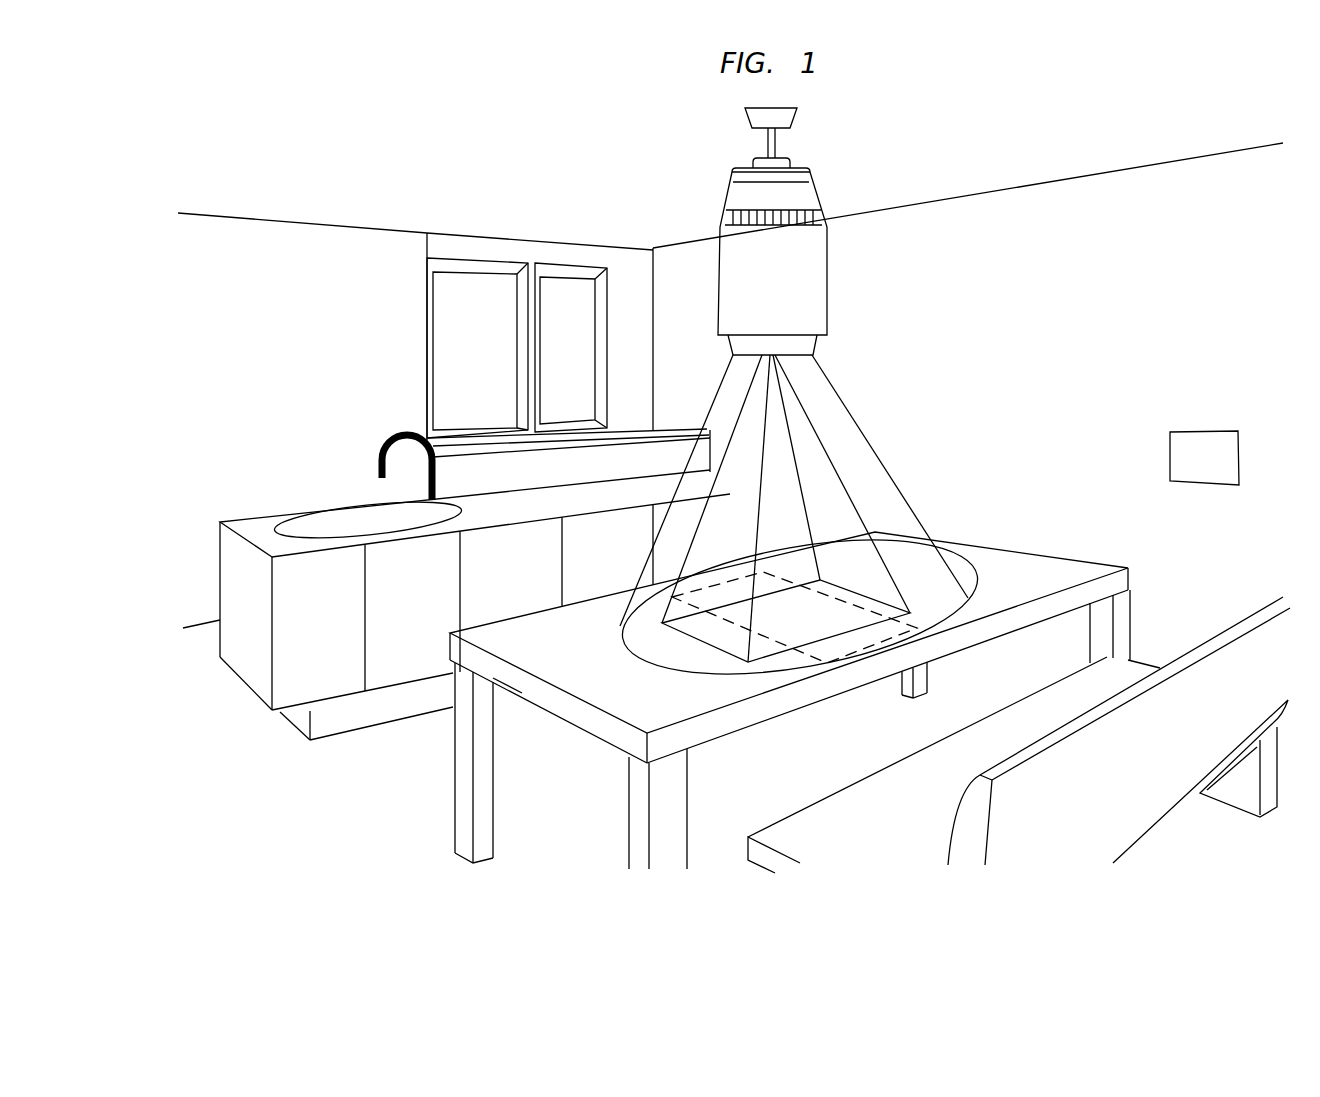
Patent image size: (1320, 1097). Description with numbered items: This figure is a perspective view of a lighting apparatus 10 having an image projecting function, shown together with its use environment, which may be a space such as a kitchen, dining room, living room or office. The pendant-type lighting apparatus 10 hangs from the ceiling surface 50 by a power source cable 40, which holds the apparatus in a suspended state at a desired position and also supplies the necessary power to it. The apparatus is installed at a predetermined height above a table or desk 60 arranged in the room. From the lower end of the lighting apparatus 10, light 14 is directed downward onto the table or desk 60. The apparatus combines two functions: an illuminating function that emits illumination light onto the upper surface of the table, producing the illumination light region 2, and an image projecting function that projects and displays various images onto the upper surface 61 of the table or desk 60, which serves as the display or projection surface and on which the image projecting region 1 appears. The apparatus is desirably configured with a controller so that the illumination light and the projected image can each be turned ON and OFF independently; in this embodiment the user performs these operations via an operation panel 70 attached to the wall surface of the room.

The image projecting region 1 is at (723, 638).
The illumination light region 2 is at (618, 640).
The lighting apparatus having an image projecting function 10 is at (827, 320).
The projection light 14 is at (777, 362).
The power source cable 40 is at (768, 148).
The ceiling surface 50 is at (897, 162).
The table or desk 60 is at (1023, 552).
The upper surface 61 is at (932, 555).
The operation panel 70 is at (1182, 432).